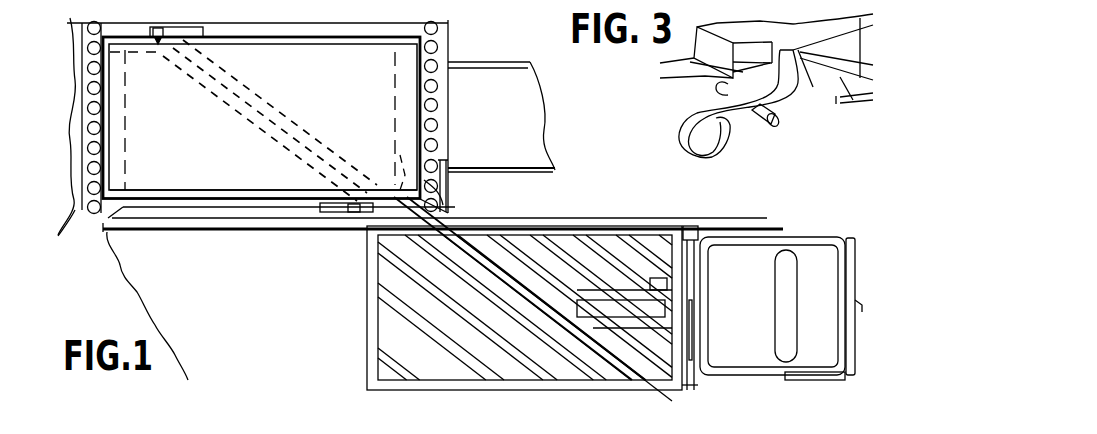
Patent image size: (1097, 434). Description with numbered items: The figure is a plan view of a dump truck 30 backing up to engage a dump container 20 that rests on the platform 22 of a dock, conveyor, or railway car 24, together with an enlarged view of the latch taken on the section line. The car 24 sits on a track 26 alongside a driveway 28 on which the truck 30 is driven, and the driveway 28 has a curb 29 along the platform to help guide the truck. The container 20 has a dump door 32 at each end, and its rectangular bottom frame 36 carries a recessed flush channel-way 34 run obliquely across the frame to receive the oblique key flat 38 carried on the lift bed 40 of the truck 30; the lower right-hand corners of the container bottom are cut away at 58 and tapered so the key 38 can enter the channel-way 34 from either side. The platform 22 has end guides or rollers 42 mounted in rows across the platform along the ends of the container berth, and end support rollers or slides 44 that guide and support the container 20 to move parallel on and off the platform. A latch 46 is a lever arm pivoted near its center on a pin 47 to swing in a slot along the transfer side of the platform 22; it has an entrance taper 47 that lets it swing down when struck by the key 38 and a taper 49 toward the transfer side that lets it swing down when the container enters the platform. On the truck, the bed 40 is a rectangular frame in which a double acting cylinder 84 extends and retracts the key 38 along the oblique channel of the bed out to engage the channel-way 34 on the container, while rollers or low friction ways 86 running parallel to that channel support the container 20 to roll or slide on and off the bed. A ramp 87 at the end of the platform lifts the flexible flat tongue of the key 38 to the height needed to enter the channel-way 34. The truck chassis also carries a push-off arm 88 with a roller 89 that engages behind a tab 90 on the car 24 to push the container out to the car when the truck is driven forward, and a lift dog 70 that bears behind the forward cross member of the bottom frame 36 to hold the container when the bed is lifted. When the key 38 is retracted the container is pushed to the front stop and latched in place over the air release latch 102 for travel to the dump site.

In FIG. 1, the dump container 20 is at (100, 231).
In FIG. 3, the dump container 20 is at (662, 63).
In FIG. 1, the platform 22 is at (73, 129).
In FIG. 1, the railway car 24 is at (442, 98).
In FIG. 1, the track 26 is at (501, 117).
In FIG. 1, the driveway 28 is at (144, 288).
In FIG. 1, the curb 29 is at (138, 235).
In FIG. 1, the dump truck 30 is at (807, 377).
In FIG. 1, the dump door 32 is at (106, 98).
In FIG. 1, the channel-way 34 is at (278, 143).
In FIG. 1, the bottom frame 36 is at (230, 187).
In FIG. 3, the bottom frame 36 is at (675, 78).
In FIG. 1, the key flat 38 is at (574, 345).
In FIG. 1, the lift bed 40 is at (367, 338).
In FIG. 1, the end guides or rollers 42 is at (97, 213).
In FIG. 1, the end support rollers or slides 44 is at (152, 163).
In FIG. 1, the latch 46 is at (152, 42).
In FIG. 3, the latch 46 is at (773, 110).
In FIG. 3, the pin / entrance taper 47 is at (795, 50).
In FIG. 3, the taper 49 is at (800, 53).
In FIG. 1, the cut-away corner 58 is at (400, 157).
In FIG. 1, the lift dog 70 is at (655, 345).
In FIG. 1, the double acting cylinder 84 is at (548, 330).
In FIG. 1, the rollers or low friction ways 86 is at (545, 252).
In FIG. 1, the ramp 87 is at (447, 197).
In FIG. 1, the push-off arm 88 is at (690, 360).
In FIG. 1, the roller 89 is at (690, 228).
In FIG. 1, the tab 90 is at (80, 58).
In FIG. 1, the air release latch 102 is at (657, 278).